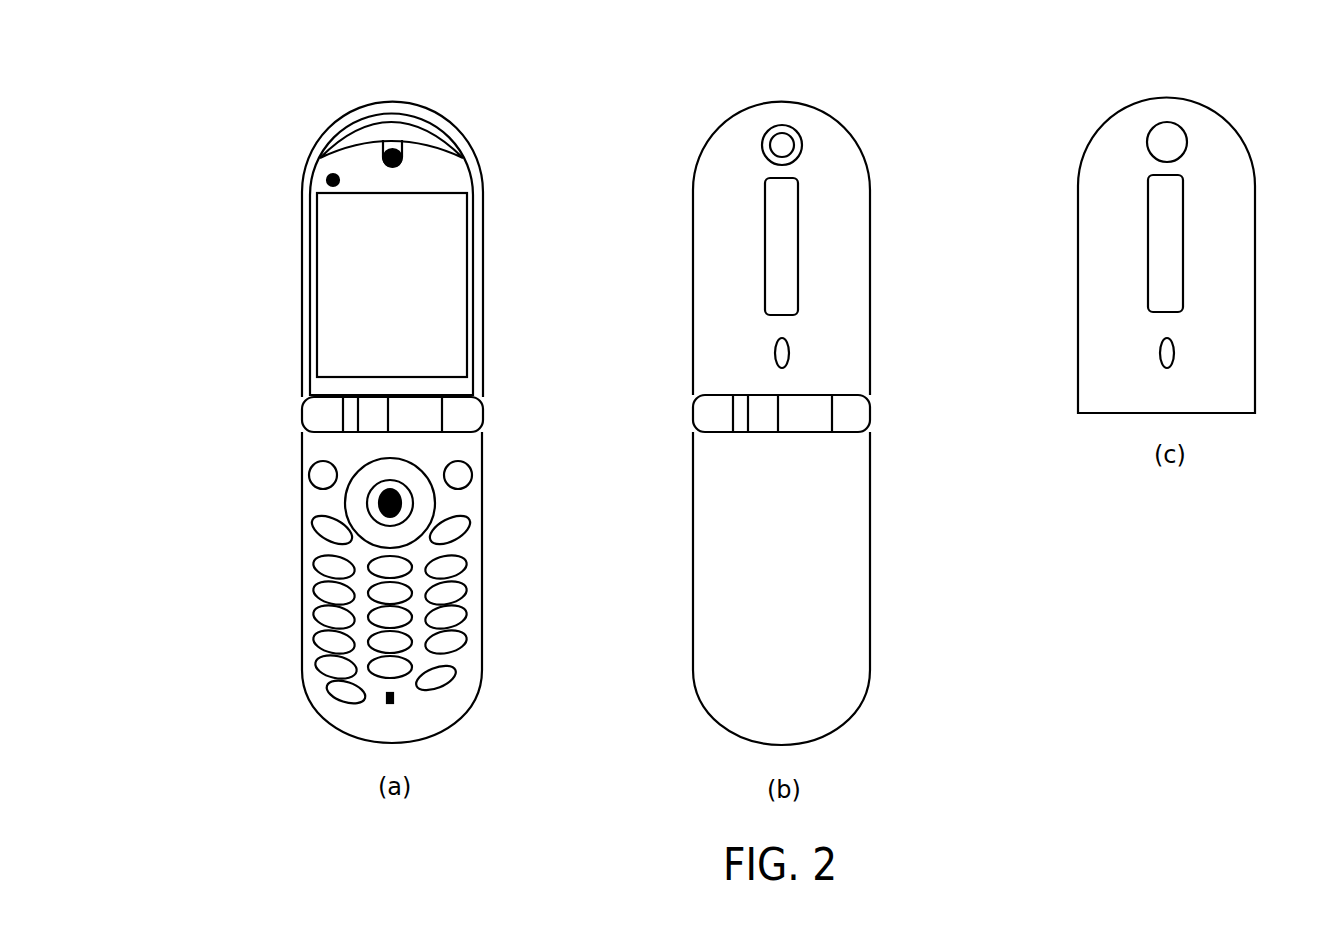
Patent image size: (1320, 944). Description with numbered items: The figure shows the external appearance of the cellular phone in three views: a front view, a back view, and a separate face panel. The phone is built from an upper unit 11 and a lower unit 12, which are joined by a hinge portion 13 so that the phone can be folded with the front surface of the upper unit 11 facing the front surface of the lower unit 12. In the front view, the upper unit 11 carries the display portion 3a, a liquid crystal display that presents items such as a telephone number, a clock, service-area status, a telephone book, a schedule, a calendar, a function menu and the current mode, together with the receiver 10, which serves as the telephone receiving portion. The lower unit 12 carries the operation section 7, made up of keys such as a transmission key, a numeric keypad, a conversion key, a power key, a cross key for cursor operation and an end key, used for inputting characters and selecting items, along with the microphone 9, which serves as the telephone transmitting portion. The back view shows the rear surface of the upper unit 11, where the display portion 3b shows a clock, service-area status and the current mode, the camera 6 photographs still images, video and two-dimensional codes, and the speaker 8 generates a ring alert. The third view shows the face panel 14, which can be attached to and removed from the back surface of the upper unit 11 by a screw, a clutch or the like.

The display portion 3a is at (473, 285).
The display portion 3b is at (773, 195).
The camera 6 is at (782, 145).
The operation section 7 is at (467, 505).
The speaker 8 is at (790, 353).
The microphone 9 is at (395, 698).
The receiver 10 is at (393, 150).
The upper unit 11 is at (302, 285).
The lower unit 12 is at (302, 609).
The hinge portion 13 is at (302, 411).
The face panel 14 is at (1212, 148).